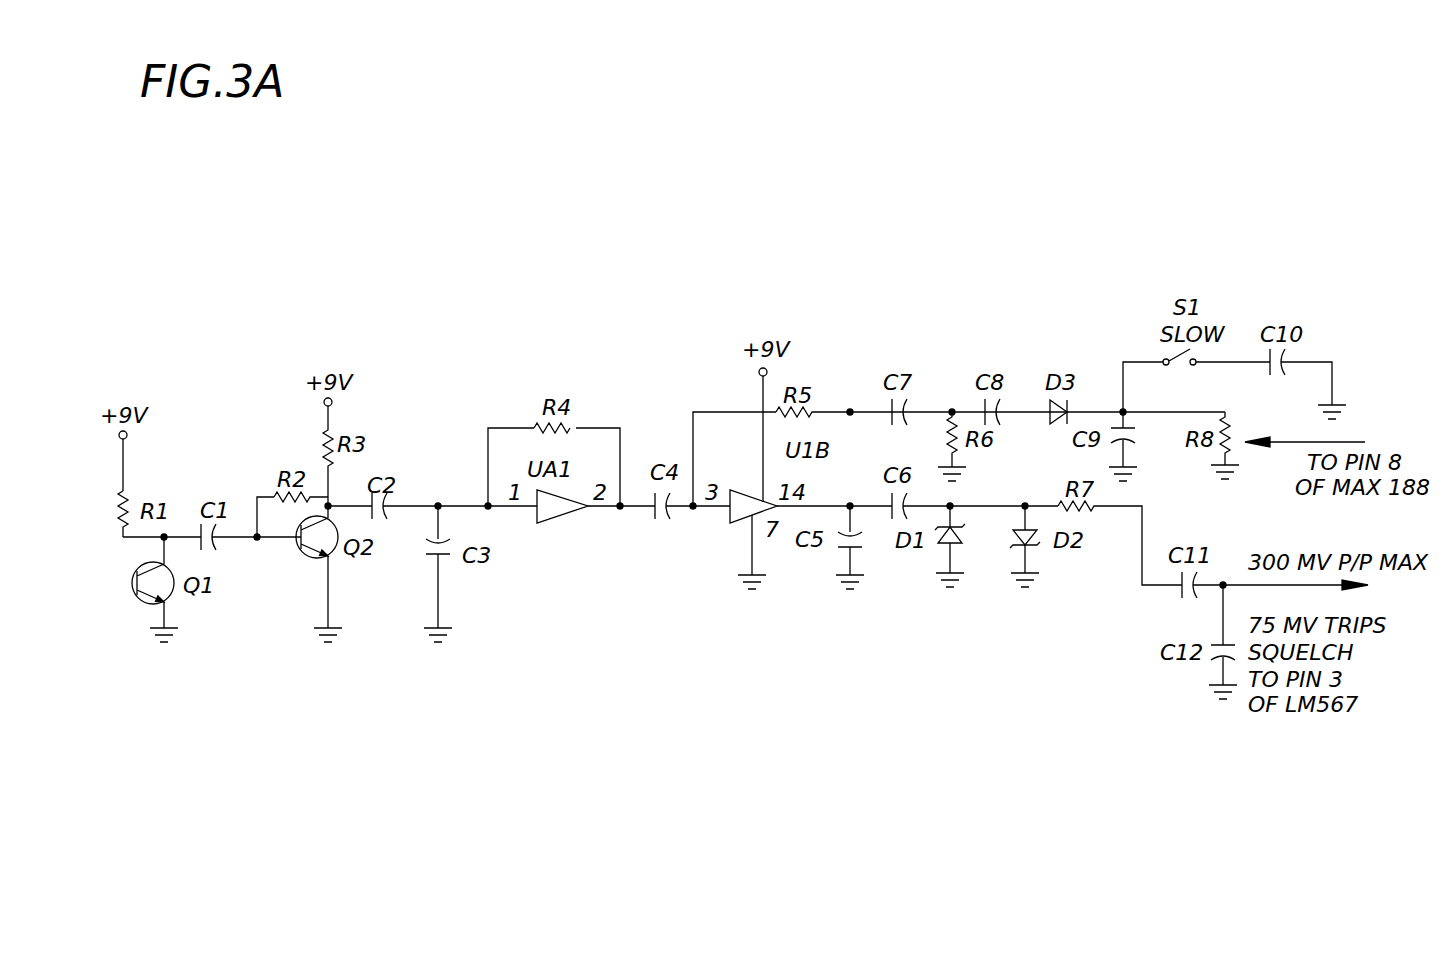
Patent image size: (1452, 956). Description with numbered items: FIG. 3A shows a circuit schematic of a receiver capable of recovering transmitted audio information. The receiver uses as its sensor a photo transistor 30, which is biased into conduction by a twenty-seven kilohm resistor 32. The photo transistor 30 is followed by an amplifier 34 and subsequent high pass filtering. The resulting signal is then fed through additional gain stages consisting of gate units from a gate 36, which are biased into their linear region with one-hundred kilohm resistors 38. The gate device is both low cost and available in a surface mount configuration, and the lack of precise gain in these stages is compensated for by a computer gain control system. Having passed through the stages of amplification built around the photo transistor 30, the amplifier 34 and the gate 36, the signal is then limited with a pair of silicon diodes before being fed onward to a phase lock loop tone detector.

The photo transistor 30 is at (135, 578).
The resistor 32 is at (123, 490).
The amplifier 34 is at (299, 556).
The gate 36 is at (563, 521).
The resistors 38 is at (570, 422).